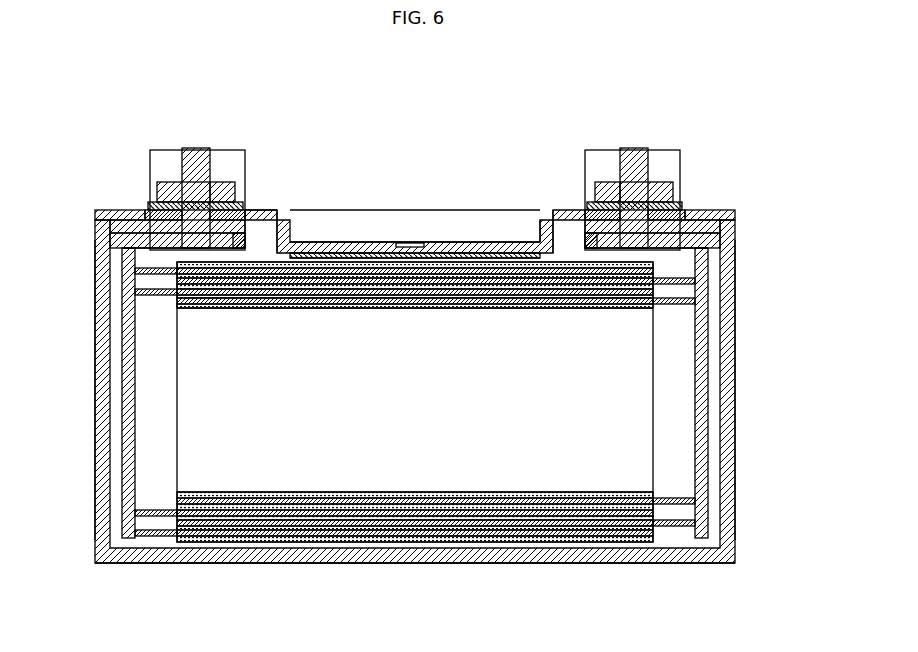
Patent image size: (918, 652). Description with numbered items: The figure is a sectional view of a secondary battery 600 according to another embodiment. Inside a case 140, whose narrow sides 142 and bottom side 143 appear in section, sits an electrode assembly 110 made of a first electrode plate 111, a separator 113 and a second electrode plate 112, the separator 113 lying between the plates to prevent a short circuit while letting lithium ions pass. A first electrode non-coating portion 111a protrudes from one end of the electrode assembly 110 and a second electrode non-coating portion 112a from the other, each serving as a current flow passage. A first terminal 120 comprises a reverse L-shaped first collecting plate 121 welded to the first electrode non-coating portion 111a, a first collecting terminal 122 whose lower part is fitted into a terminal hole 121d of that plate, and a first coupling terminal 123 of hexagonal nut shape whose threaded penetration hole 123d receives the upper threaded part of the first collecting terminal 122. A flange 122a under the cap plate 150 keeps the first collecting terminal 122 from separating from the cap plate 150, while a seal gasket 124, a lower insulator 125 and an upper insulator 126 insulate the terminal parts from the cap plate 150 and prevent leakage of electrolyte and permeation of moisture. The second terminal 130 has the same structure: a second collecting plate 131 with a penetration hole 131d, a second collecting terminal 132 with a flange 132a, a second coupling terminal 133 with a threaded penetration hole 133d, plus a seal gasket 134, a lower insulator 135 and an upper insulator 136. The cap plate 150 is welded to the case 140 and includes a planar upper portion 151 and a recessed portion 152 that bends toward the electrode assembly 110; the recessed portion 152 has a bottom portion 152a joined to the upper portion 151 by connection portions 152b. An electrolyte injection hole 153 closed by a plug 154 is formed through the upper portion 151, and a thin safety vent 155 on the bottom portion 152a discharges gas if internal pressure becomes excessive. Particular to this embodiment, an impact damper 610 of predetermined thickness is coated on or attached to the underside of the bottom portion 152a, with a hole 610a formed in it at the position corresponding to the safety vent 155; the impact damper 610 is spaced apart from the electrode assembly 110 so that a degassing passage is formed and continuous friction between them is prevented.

The secondary battery 600 is at (492, 126).
The electrode assembly 110 is at (505, 550).
The first electrode plate 111 is at (292, 540).
The first electrode non-coating portion 111a is at (158, 538).
The second electrode plate 112 is at (577, 526).
The second electrode non-coating portion 112a is at (668, 528).
The separator 113 is at (432, 522).
The first terminal 120 is at (180, 138).
The first collecting plate 121 is at (124, 318).
The terminal hole 121d is at (190, 250).
The first collecting terminal 122 is at (198, 148).
The flange 122a is at (120, 240).
The first coupling terminal 123 is at (175, 182).
The threaded penetration hole 123d is at (208, 190).
The seal gasket 124 is at (150, 212).
The lower insulator 125 is at (110, 223).
The upper insulator 126 is at (160, 207).
The second terminal 130 is at (650, 138).
The second collecting plate 131 is at (709, 303).
The penetration hole 131d is at (636, 250).
The second collecting terminal 132 is at (632, 148).
The flange 132a is at (720, 240).
The second coupling terminal 133 is at (658, 182).
The threaded penetration hole 133d is at (618, 190).
The seal gasket 134 is at (682, 212).
The lower insulator 135 is at (720, 223).
The upper insulator 136 is at (675, 207).
The case 140 is at (741, 357).
The narrow sides 142 is at (96, 433).
The bottom side 143 is at (713, 564).
The cap plate 150 is at (743, 209).
The upper portion 151 is at (553, 212).
The recessed portion 152 is at (334, 237).
The bottom portion 152a is at (466, 243).
The connection portions 152b is at (537, 228).
The electrolyte injection hole 153 is at (262, 210).
The plug 154 is at (283, 212).
The safety vent 155 is at (410, 243).
The impact damper 610 is at (437, 243).
The hole 610a is at (381, 243).